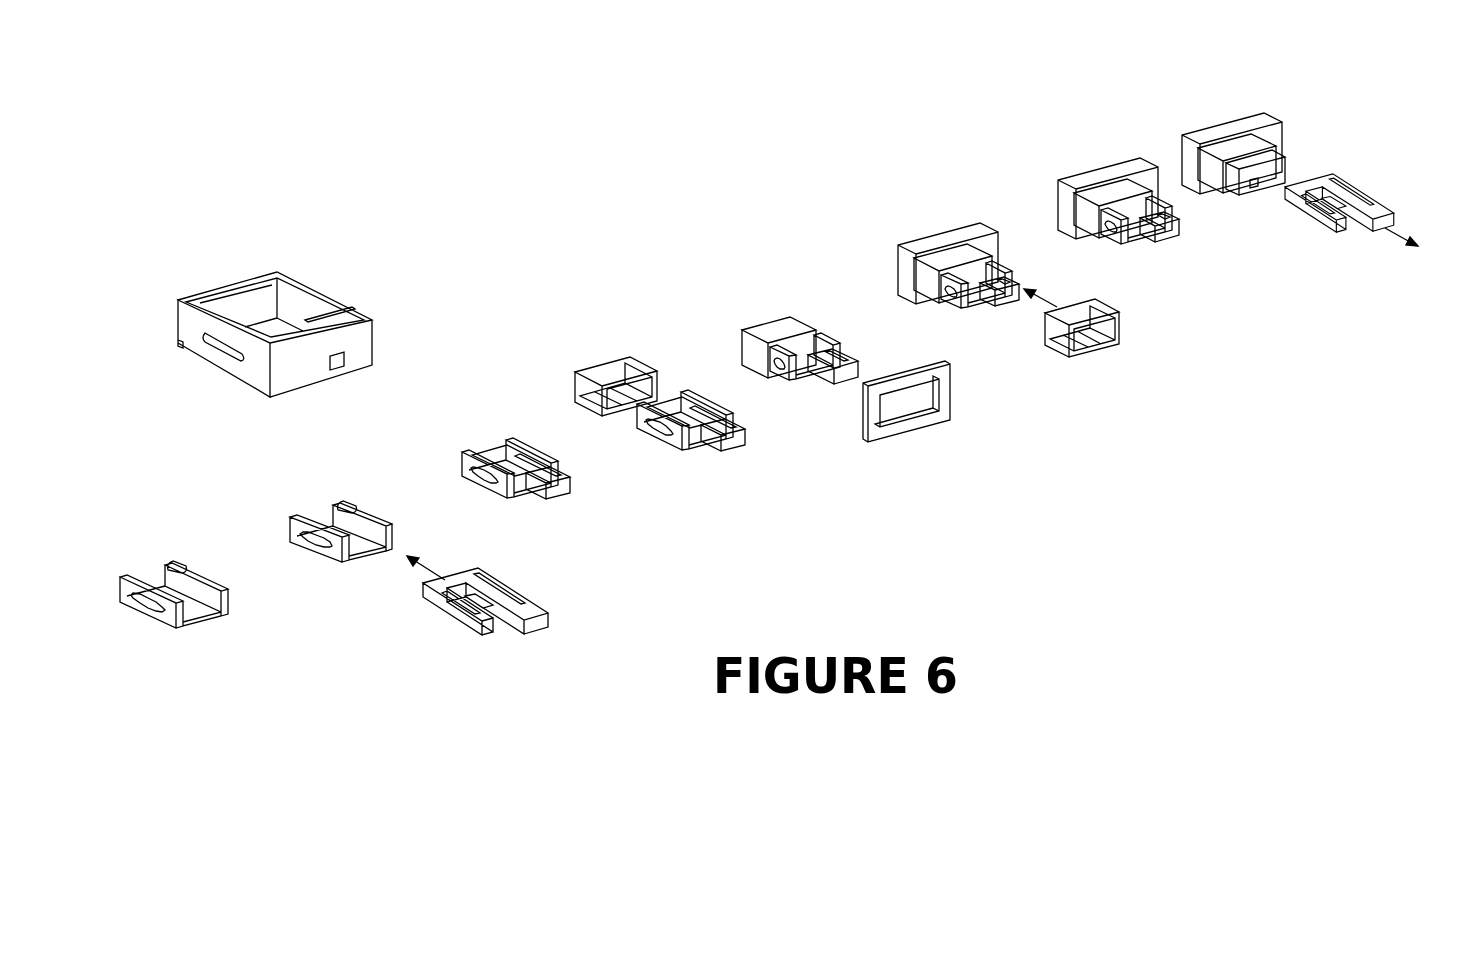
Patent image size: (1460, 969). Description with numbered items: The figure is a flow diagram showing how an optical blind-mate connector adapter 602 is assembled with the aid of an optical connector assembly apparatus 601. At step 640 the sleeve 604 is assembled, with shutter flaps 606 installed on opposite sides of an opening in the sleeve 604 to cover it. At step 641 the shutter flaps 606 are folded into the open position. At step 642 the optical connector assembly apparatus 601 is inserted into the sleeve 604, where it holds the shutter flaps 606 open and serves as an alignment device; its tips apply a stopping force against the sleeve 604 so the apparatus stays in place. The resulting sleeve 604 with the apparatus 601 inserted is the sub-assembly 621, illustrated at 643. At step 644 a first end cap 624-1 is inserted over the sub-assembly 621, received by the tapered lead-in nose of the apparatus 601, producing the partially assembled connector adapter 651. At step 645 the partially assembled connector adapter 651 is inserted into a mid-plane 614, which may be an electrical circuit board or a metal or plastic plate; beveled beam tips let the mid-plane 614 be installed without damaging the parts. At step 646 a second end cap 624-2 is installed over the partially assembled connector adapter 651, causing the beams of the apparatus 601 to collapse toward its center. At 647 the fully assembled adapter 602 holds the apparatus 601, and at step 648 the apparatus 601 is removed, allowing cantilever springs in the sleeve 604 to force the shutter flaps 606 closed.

The optical connector assembly apparatus 601 is at (541, 585).
The optical blind-mate connector adapter 602 is at (1300, 119).
The sleeve 604 is at (378, 503).
The shutter flaps 606 is at (244, 283).
The mid-plane 614 is at (862, 441).
The sub-assembly 621 is at (668, 446).
The first end cap 624-1 is at (640, 360).
The second end cap 624-2 is at (1122, 313).
The sleeve assembly step 640 is at (366, 224).
The shutter flap folding step 641 is at (267, 470).
The apparatus insertion step 642 is at (411, 409).
The sub-assembly illustration 643 is at (568, 343).
The first end cap insertion step 644 is at (700, 287).
The mid-plane insertion step 645 is at (857, 220).
The second end cap installation step 646 is at (1024, 149).
The fully assembled adapter illustration 647 is at (1158, 92).
The apparatus removal step 648 is at (1166, 93).
The partially assembled connector adapter 651 is at (795, 383).